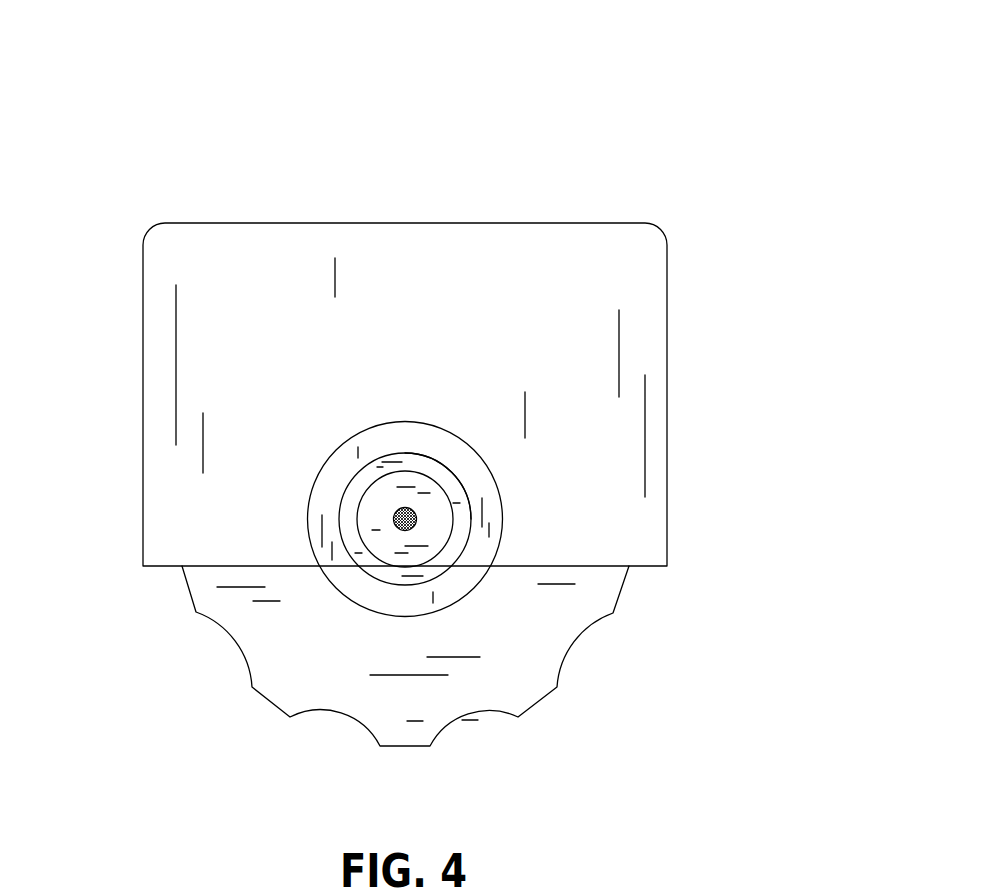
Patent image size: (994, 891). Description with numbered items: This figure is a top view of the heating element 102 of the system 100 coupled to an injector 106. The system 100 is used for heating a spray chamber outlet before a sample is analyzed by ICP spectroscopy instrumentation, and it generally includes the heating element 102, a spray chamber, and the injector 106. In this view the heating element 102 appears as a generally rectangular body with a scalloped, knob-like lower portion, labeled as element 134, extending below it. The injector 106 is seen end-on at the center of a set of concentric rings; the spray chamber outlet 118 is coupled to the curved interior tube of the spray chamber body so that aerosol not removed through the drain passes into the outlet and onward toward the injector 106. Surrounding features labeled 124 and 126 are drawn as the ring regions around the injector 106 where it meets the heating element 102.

The system 100 is at (710, 58).
The heating element 102 is at (255, 240).
The injector 106 is at (380, 505).
The spray chamber outlet 118 is at (453, 552).
The annular gap 124 is at (452, 461).
The outer flange 126 is at (465, 485).
The scalloped knob base 134 is at (482, 695).